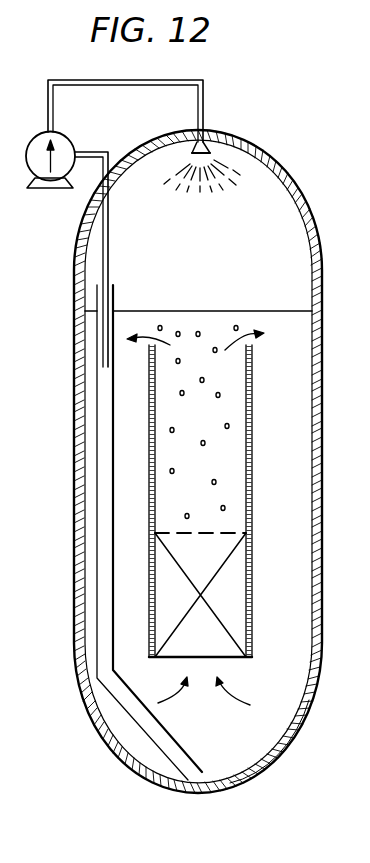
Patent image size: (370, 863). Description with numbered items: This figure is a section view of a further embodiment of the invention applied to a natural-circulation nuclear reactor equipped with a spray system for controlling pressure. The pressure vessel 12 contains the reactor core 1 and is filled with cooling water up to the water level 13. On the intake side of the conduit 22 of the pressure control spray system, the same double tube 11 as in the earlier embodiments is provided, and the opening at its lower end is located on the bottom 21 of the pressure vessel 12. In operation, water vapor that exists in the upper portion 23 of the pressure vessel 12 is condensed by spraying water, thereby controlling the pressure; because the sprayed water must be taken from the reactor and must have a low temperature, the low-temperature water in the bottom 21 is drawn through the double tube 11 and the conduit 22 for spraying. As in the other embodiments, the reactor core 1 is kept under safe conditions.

The reactor core 1 is at (165, 588).
The double tube 11 is at (96, 331).
The pressure vessel 12 is at (77, 249).
The level of cooling water 13 is at (277, 310).
The bottom of the pressure vessel 21 is at (236, 751).
The conduit 22 is at (53, 108).
The upper portion of the pressure vessel 23 is at (267, 187).